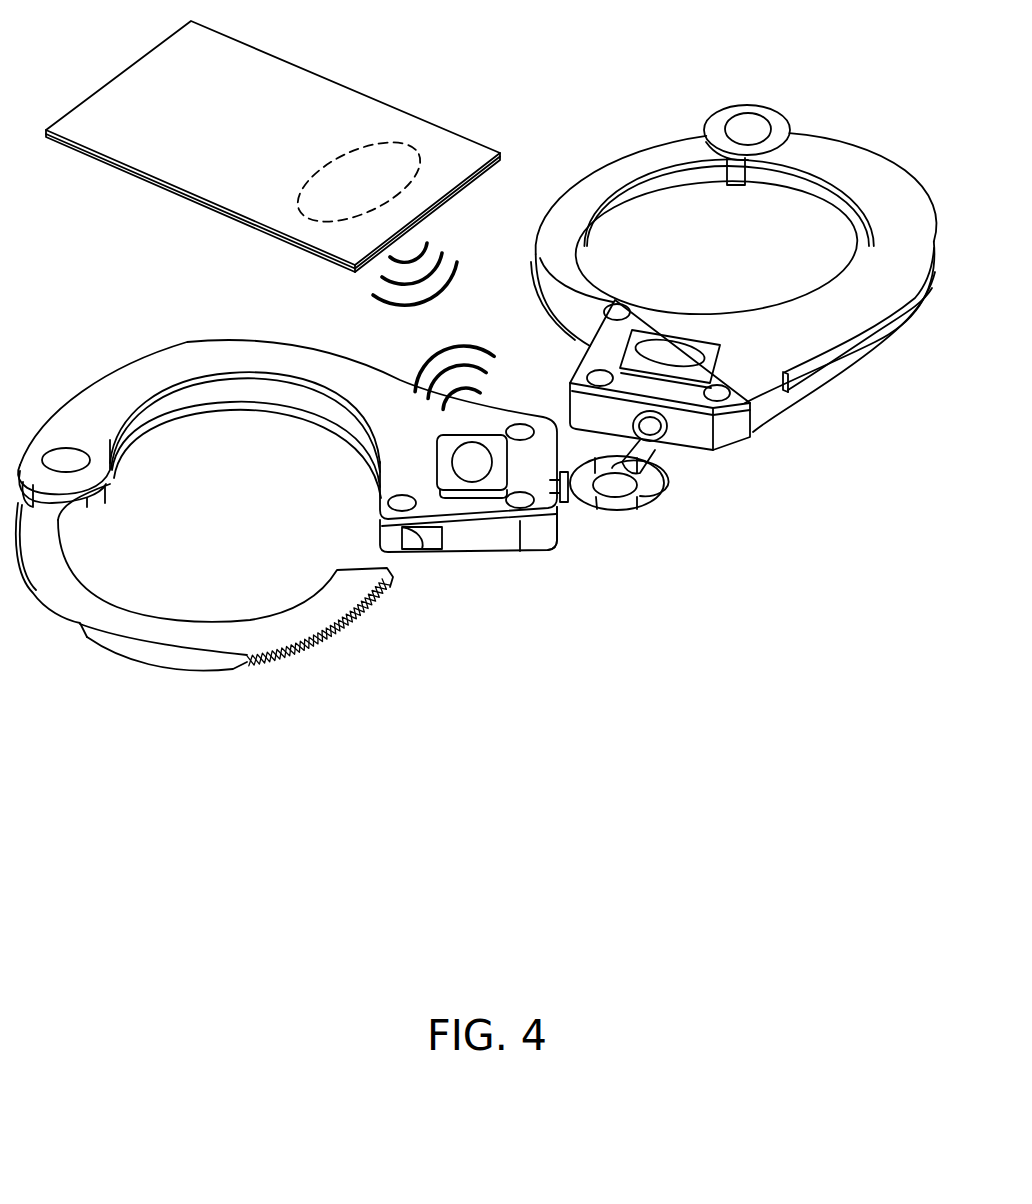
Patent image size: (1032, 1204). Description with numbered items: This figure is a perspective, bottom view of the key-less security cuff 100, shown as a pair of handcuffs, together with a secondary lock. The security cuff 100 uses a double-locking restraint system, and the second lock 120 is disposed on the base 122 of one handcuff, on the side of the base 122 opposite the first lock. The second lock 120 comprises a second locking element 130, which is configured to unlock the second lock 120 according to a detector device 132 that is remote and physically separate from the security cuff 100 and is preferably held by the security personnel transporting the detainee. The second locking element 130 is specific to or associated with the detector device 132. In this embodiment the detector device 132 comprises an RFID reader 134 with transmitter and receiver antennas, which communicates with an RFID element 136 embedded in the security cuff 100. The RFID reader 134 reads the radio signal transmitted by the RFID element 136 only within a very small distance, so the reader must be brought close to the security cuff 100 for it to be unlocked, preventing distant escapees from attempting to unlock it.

The security cuff 100 is at (476, 346).
The second lock 120 is at (505, 517).
The base 122 is at (549, 553).
The second locking element 130 is at (495, 432).
The detector device 132 is at (347, 80).
The RFID reader 134 is at (365, 178).
The RFID element 136 is at (490, 466).